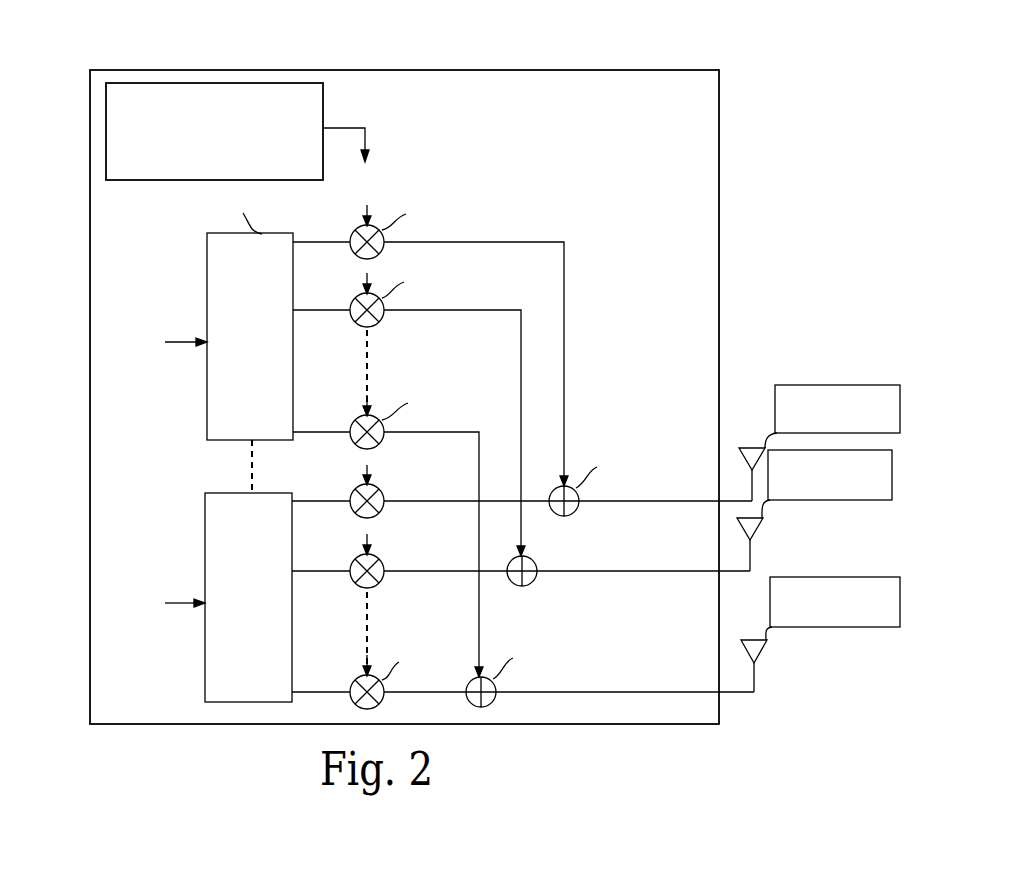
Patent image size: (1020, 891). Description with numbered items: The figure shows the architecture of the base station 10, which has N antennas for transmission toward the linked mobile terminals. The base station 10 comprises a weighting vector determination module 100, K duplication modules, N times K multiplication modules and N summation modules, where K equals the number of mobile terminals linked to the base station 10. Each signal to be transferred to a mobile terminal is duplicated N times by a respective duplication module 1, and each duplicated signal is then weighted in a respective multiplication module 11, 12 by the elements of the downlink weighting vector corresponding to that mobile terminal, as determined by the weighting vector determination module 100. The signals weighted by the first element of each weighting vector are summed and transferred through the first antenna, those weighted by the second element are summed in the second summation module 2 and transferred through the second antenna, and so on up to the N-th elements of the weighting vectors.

The base station 10 is at (458, 70).
The weighting vector determination module 100 is at (160, 83).
The code processing unit Cp_ 1 is at (207, 527).
The summer Sum_ 2 is at (534, 558).
The multiplier Mul_ 11 is at (382, 489).
The multiplier Mul_ 12 is at (382, 559).